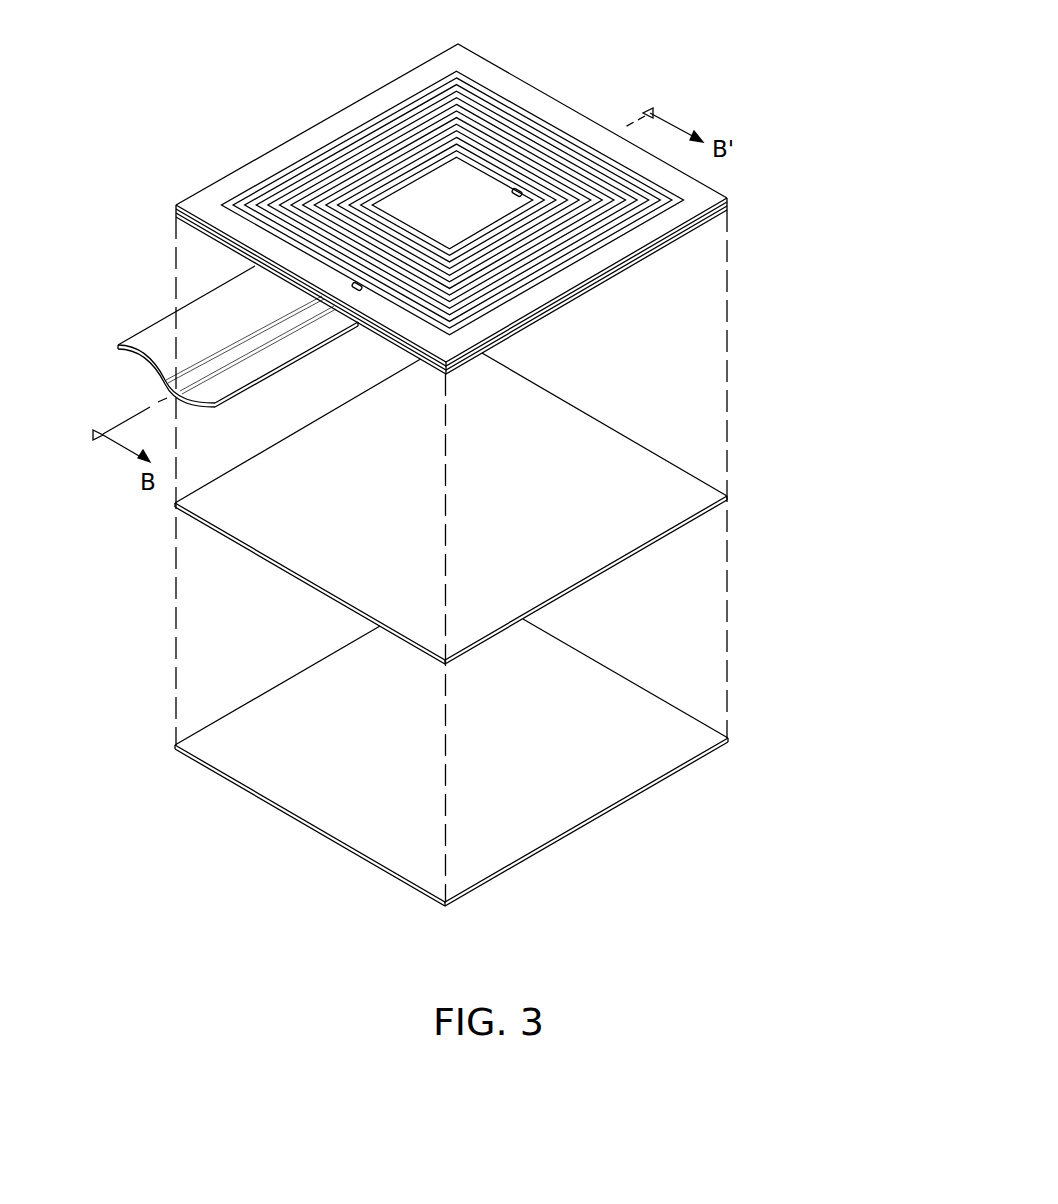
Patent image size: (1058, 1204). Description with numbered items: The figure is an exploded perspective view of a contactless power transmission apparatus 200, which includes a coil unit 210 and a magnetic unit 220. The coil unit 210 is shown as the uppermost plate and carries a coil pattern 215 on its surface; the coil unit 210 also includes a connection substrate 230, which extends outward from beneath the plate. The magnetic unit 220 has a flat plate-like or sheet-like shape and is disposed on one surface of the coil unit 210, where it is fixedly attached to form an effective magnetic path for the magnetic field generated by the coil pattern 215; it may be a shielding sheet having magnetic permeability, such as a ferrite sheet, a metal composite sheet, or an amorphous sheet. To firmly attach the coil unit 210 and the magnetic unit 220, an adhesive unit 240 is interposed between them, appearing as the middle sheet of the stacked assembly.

The contactless power transmission apparatus 200 is at (840, 186).
The coil unit 210 is at (738, 203).
The coil pattern 215 is at (550, 122).
The magnetic unit 220 is at (686, 702).
The connection substrate 230 is at (158, 335).
The adhesive unit 240 is at (688, 461).